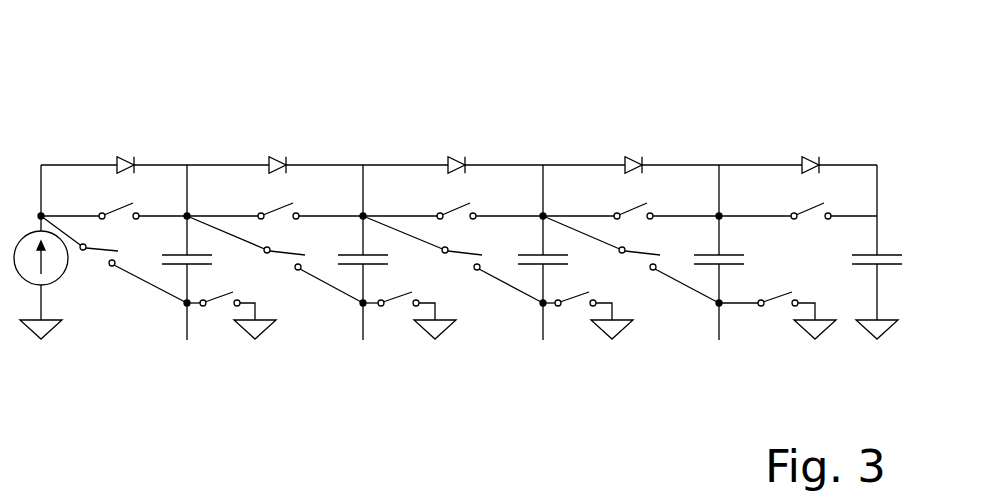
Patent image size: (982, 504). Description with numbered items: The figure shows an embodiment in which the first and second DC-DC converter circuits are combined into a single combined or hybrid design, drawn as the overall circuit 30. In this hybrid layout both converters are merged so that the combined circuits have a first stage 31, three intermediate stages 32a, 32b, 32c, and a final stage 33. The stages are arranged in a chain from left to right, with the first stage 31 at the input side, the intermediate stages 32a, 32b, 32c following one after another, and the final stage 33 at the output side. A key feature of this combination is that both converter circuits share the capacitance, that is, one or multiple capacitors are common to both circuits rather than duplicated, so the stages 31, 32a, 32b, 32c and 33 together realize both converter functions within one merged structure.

The charge pump circuit 30 is at (112, 84).
The first stage 31 is at (168, 137).
The intermediate stage 32a is at (298, 139).
The intermediate stage 32b is at (463, 139).
The intermediate stage 32c is at (629, 142).
The final stage 33 is at (848, 147).